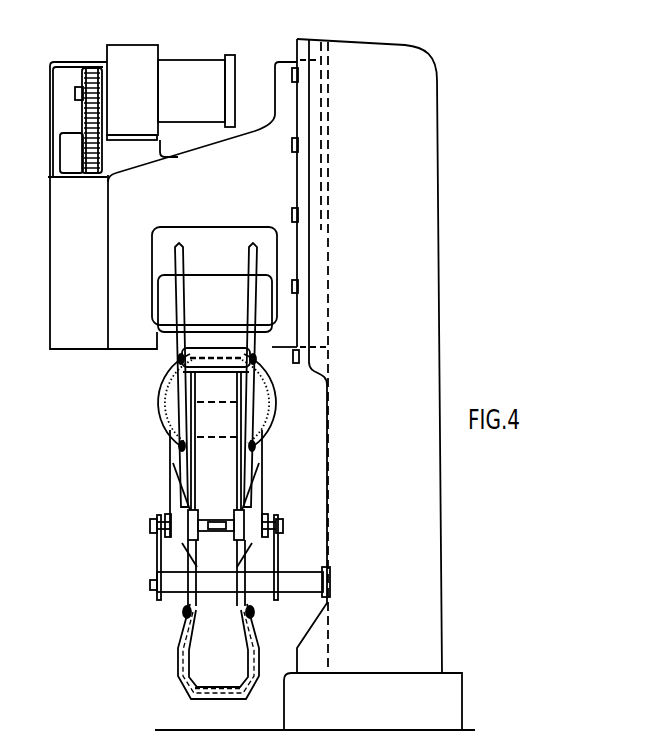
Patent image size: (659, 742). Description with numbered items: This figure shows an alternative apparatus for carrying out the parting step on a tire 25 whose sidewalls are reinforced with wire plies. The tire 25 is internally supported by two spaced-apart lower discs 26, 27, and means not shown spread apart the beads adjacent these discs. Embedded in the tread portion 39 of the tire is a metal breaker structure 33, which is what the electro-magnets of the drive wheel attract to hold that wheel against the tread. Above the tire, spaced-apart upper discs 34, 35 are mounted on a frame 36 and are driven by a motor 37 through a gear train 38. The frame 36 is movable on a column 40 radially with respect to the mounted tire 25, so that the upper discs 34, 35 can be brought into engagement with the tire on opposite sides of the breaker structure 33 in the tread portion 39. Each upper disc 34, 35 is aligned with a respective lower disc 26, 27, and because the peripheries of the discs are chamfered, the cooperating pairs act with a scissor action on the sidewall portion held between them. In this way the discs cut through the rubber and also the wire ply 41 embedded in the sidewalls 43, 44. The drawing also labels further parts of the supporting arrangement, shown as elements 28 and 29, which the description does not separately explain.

The tire 25 is at (265, 389).
The disc 26 is at (174, 465).
The disc 27 is at (250, 462).
The left outer plate 28 is at (172, 428).
The right outer plate 29 is at (266, 432).
The metal breaker structure 33 is at (208, 370).
The upper disc 34 is at (180, 243).
The upper disc 35 is at (252, 243).
The frame 36 is at (291, 104).
The motor 37 is at (182, 70).
The gear train 38 is at (88, 70).
The tread portion 39 is at (222, 347).
The column 40 is at (424, 238).
The wire ply 41 is at (185, 617).
The sidewall 43 is at (177, 652).
The sidewall 44 is at (262, 645).